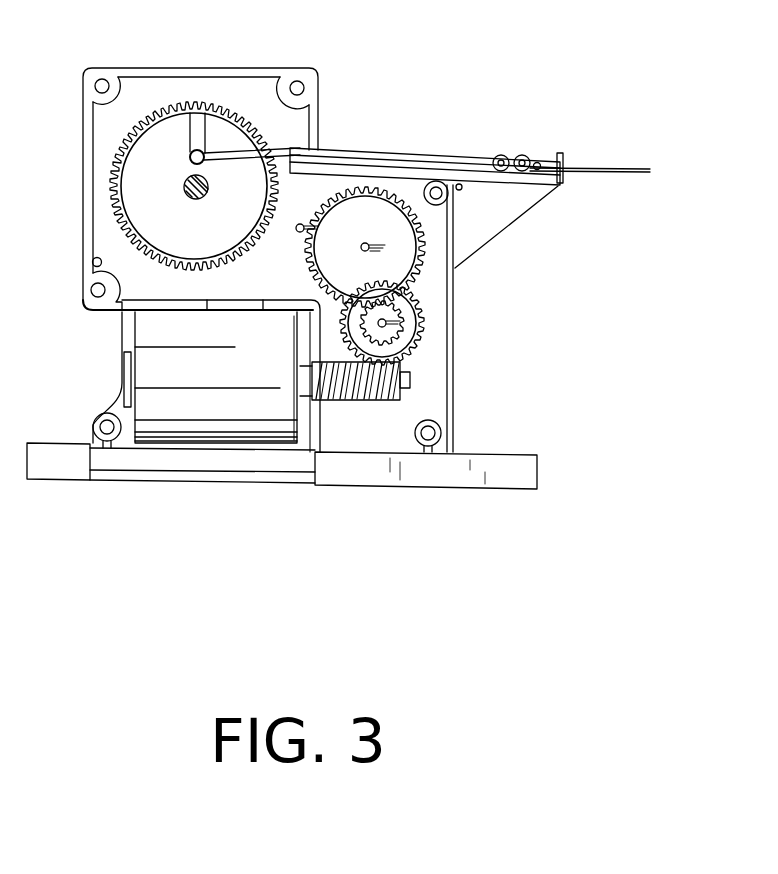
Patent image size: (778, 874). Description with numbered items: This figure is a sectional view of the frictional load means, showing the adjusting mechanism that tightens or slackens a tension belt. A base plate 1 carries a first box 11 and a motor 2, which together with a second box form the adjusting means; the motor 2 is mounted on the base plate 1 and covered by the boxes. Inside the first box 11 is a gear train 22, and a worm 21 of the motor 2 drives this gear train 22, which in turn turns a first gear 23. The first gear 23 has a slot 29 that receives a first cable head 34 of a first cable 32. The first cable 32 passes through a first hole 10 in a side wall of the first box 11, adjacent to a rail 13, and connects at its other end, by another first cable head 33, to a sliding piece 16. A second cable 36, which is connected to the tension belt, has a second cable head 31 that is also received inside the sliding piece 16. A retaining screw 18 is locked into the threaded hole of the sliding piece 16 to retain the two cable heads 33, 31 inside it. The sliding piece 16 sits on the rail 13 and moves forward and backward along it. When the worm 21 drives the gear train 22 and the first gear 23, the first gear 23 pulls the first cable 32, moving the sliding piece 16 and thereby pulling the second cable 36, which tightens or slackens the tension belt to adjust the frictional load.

The base plate 1 is at (512, 465).
The motor 2 is at (143, 333).
The first hole 10 is at (318, 150).
The first box 11 is at (148, 67).
The rail 13 is at (358, 152).
The sliding piece 16 is at (560, 157).
The retaining screw 18 is at (522, 156).
The worm 21 is at (410, 385).
The gear train 22 is at (428, 272).
The first gear 23 is at (115, 150).
The slot 29 is at (205, 152).
The second cable head 31 is at (538, 163).
The first cable 32 is at (420, 158).
The first cable head 33 is at (498, 157).
The first cable head 34 is at (188, 163).
The second cable 36 is at (628, 168).